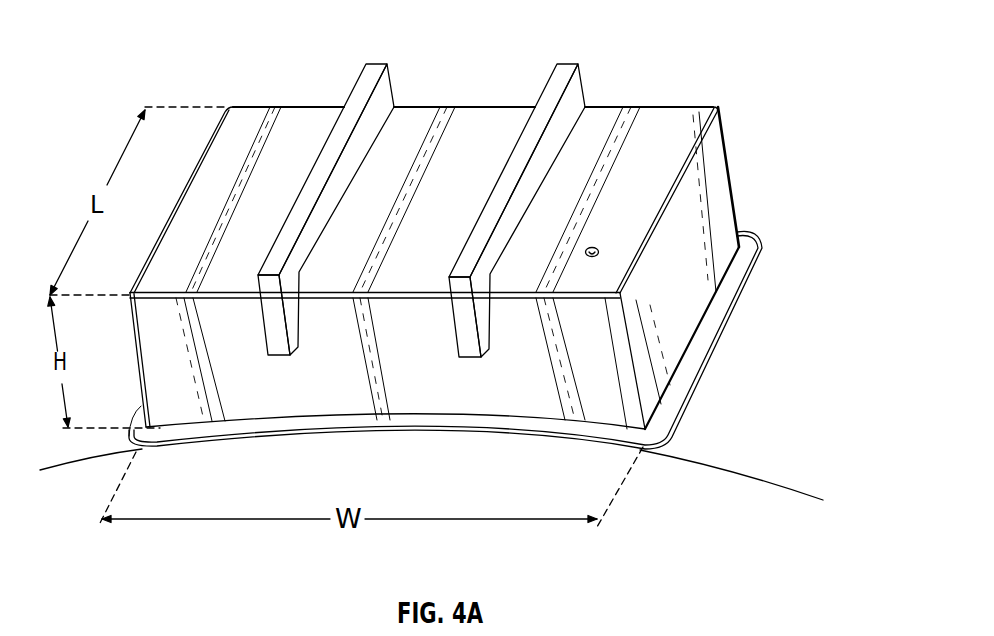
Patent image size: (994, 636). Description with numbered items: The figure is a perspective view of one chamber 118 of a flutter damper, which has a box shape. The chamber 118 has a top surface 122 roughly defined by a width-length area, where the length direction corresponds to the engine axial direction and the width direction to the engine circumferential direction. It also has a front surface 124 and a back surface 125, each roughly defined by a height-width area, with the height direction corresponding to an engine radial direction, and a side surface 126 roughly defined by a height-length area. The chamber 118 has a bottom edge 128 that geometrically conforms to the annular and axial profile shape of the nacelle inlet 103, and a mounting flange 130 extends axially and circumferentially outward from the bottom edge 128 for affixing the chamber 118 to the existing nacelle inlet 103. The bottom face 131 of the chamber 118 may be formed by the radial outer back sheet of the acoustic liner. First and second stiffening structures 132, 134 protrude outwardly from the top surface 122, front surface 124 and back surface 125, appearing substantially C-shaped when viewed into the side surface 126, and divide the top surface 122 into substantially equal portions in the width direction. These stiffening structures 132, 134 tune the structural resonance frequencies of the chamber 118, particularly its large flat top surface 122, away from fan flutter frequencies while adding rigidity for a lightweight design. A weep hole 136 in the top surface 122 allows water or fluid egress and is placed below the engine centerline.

The nacelle inlet 103 is at (764, 480).
The chamber 118 is at (444, 253).
The top surface 122 is at (198, 207).
The front surface 124 is at (163, 365).
The back surface 125 is at (303, 97).
The side surface 126 is at (713, 223).
The bottom edge 128 is at (434, 424).
The mounting flange 130 is at (325, 415).
The bottom face 131 is at (220, 440).
The first stiffening structure 132 is at (375, 65).
The second stiffening structure 134 is at (563, 65).
The weep hole 136 is at (592, 240).